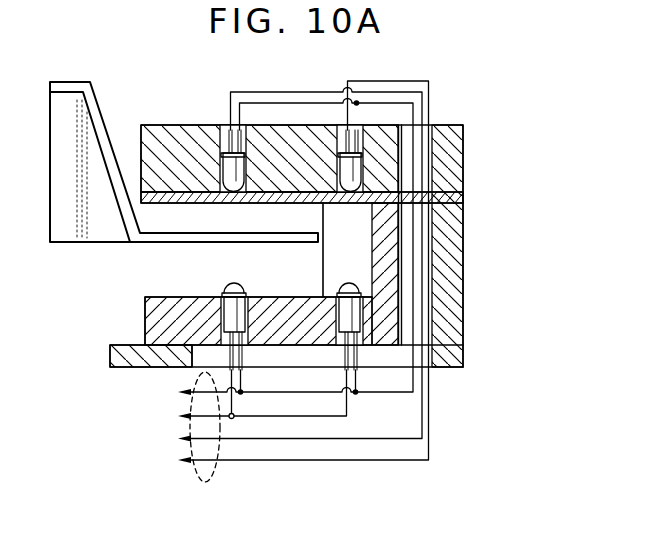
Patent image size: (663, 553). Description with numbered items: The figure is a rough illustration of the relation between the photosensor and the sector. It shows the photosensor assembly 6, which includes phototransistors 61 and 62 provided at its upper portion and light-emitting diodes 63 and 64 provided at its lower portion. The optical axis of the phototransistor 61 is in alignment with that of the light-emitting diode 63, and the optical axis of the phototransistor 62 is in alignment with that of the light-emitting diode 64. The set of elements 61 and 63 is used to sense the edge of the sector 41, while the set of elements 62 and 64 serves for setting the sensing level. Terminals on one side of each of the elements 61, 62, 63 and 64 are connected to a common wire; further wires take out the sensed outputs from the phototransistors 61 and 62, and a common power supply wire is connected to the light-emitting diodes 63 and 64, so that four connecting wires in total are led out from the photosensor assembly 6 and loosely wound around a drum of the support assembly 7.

The photosensor assembly 6 is at (471, 146).
The support assembly 7 is at (125, 362).
The sector 41 is at (83, 232).
The phototransistor 61 is at (222, 132).
The phototransistor 62 is at (341, 166).
The light-emitting diode 63 is at (229, 312).
The light-emitting diode 64 is at (345, 310).